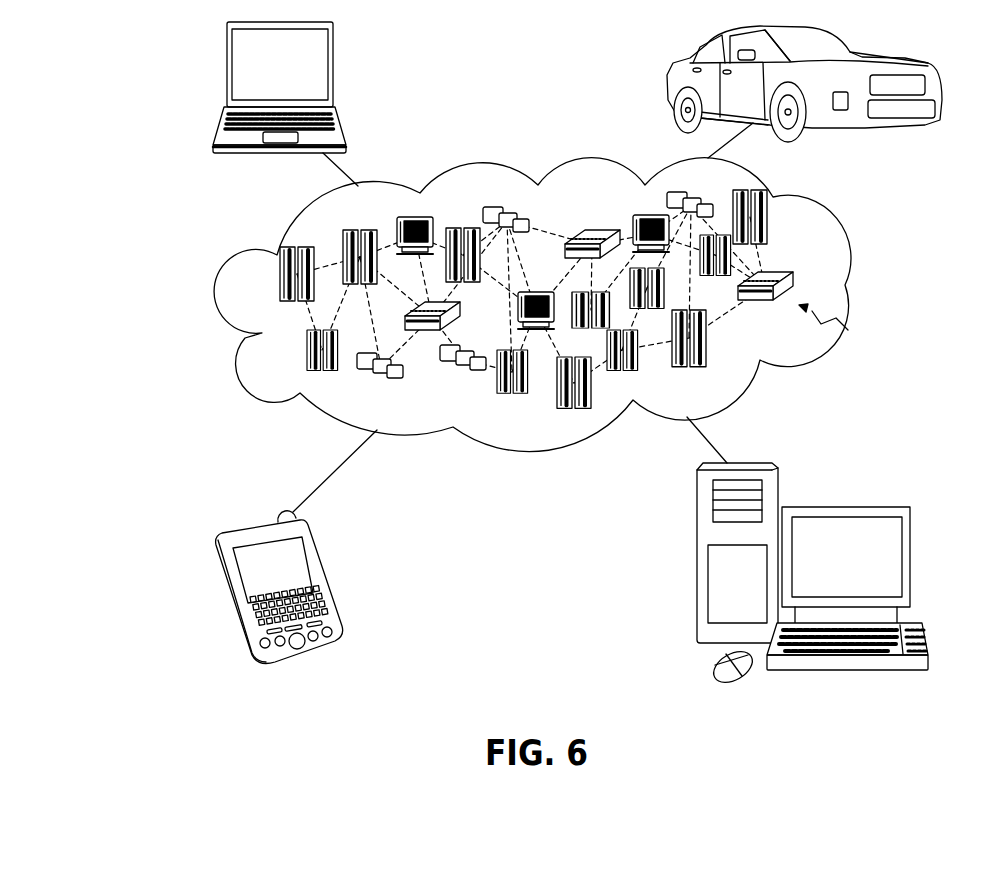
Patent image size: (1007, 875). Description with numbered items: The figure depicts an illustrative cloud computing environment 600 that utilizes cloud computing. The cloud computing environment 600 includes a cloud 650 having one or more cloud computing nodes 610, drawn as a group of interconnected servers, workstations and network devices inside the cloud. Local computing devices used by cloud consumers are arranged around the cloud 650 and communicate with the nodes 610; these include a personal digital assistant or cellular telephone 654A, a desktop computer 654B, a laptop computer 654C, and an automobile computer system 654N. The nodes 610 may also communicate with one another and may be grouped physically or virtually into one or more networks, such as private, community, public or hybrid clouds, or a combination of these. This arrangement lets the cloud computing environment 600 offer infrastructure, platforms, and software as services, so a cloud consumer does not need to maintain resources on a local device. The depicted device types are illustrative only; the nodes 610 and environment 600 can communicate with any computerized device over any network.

The cloud computing environment 600 is at (96, 41).
The cloud 650 is at (843, 283).
The cloud computing nodes 610 is at (842, 324).
The personal digital assistant (PDA) or cellular telephone 654A is at (327, 577).
The desktop computer 654B is at (845, 506).
The laptop computer 654C is at (334, 70).
The automobile computer system 654N is at (672, 83).